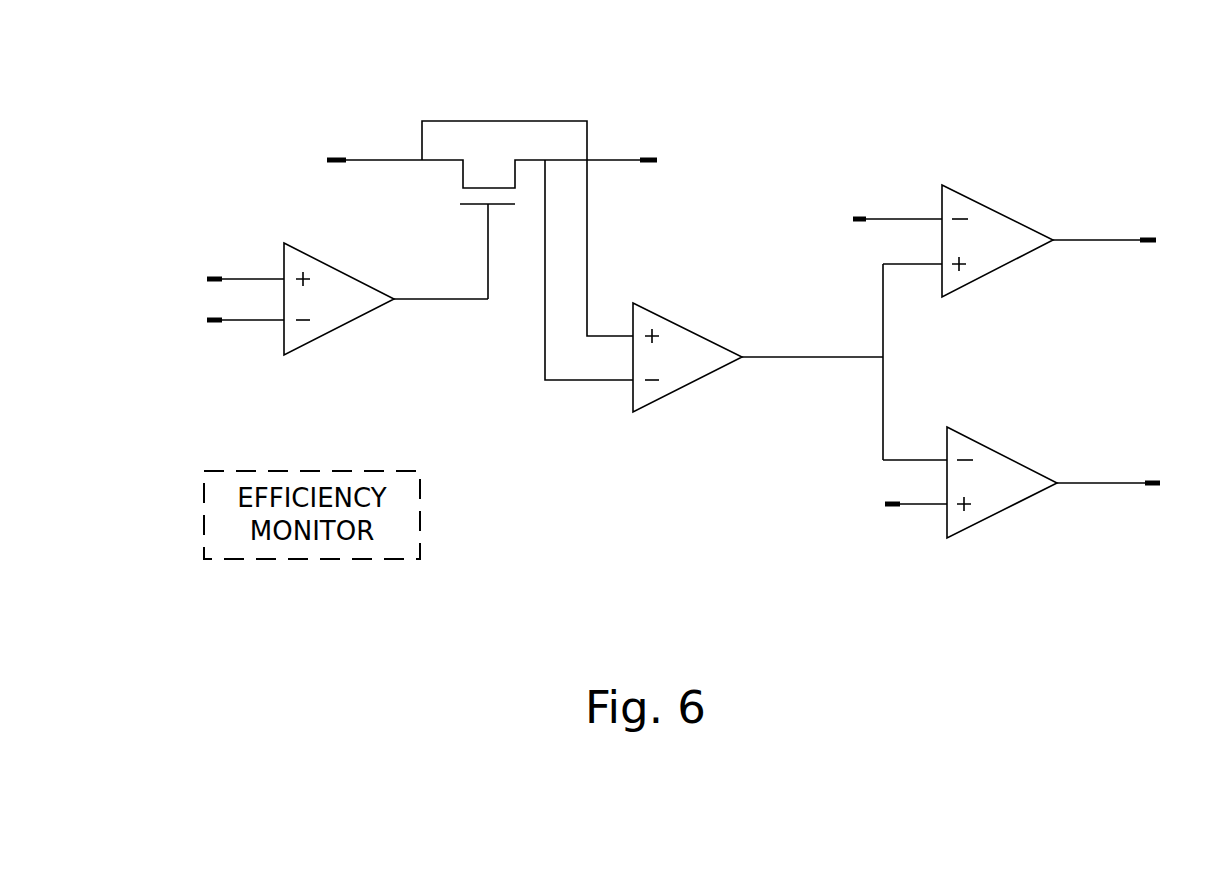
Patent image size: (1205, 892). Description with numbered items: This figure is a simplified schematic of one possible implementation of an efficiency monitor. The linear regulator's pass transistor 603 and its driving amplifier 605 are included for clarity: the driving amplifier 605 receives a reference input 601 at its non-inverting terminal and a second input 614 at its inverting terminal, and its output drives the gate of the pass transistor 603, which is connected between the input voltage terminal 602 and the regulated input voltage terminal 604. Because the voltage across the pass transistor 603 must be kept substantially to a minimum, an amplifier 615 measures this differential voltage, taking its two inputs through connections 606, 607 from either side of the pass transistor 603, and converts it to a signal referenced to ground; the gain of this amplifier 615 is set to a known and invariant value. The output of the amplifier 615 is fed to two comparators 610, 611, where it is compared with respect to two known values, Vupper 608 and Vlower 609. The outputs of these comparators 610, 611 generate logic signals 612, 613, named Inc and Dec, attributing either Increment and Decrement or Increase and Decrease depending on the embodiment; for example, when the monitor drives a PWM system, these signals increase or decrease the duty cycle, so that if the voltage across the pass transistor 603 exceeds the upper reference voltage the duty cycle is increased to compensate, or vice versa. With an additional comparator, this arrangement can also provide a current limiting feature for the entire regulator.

The reference voltage input VREF 601 is at (232, 278).
The input voltage terminal VIN 602 is at (385, 160).
The pass transistor 603 is at (497, 180).
The regulated input voltage terminal VINREG 604 is at (650, 158).
The driving amplifier 605 is at (337, 317).
The non-inverting input connection 606 is at (586, 305).
The inverting input connection 607 is at (576, 382).
The upper reference voltage Vupper 608 is at (905, 219).
The lower reference voltage Vlower 609 is at (925, 505).
The comparator 610 is at (980, 215).
The comparator 611 is at (997, 500).
The logic signal Inc 612 is at (1115, 245).
The logic signal Dec 613 is at (1083, 480).
The inverting input of operational amplifier 614 is at (258, 323).
The amplifier 615 is at (677, 370).